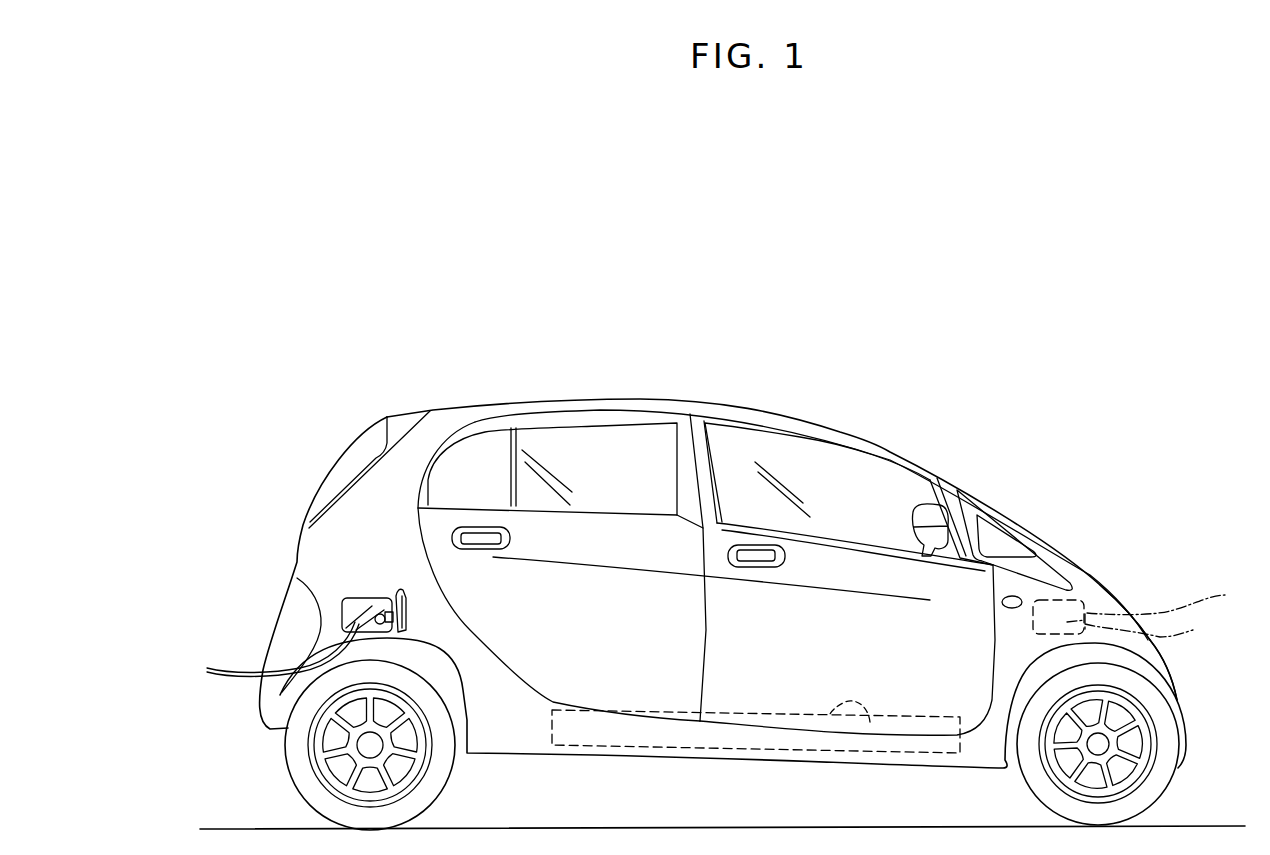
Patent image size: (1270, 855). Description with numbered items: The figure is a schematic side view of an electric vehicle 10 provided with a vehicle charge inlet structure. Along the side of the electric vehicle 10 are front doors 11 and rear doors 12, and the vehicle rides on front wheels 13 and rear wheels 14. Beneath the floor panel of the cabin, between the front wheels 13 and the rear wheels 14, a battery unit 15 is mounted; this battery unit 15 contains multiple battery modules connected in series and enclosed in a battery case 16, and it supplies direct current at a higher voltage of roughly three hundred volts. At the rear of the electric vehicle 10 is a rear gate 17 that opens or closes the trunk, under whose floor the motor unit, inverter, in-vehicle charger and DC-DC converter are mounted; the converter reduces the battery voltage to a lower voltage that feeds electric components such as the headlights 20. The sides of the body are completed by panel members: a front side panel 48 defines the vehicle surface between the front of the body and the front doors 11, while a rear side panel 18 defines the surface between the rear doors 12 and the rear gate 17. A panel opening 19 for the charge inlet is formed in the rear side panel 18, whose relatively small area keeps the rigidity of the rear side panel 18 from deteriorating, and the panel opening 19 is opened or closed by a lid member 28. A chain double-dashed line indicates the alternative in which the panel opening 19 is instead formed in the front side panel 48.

The electric vehicle 10 is at (968, 409).
The front doors 11 is at (830, 627).
The rear doors 12 is at (630, 610).
The front wheels 13 is at (1157, 777).
The rear wheels 14 is at (300, 777).
The battery unit 15 is at (548, 732).
The battery case 16 is at (870, 722).
The rear gate 17 is at (297, 557).
The rear side panel 18 is at (353, 552).
The panel opening 19 is at (342, 622).
The headlights 20 is at (1127, 600).
The lid member 28 is at (407, 590).
The front side panel 48 is at (1080, 590).